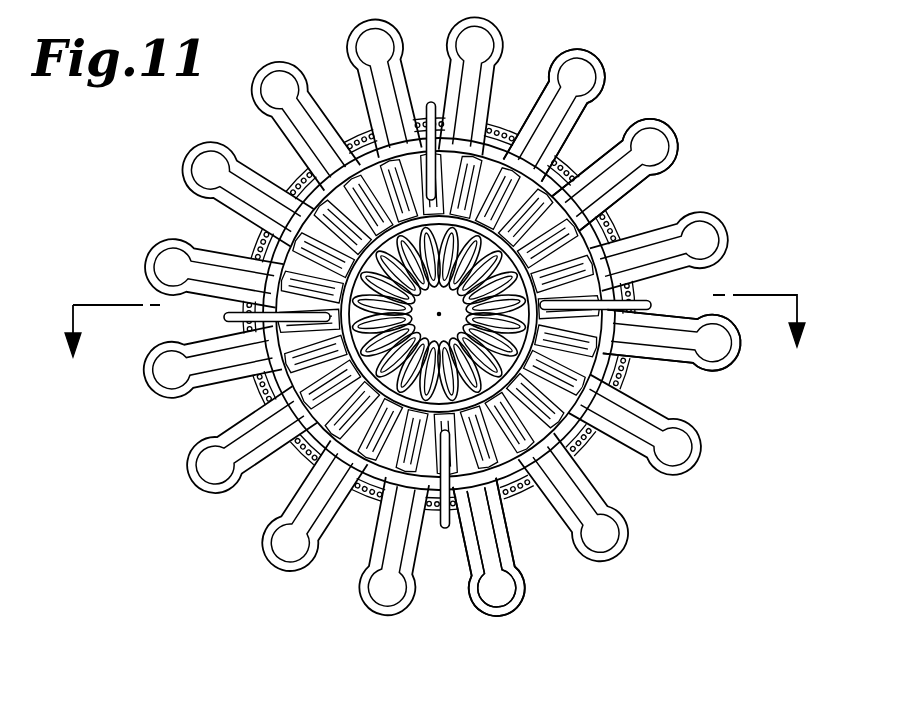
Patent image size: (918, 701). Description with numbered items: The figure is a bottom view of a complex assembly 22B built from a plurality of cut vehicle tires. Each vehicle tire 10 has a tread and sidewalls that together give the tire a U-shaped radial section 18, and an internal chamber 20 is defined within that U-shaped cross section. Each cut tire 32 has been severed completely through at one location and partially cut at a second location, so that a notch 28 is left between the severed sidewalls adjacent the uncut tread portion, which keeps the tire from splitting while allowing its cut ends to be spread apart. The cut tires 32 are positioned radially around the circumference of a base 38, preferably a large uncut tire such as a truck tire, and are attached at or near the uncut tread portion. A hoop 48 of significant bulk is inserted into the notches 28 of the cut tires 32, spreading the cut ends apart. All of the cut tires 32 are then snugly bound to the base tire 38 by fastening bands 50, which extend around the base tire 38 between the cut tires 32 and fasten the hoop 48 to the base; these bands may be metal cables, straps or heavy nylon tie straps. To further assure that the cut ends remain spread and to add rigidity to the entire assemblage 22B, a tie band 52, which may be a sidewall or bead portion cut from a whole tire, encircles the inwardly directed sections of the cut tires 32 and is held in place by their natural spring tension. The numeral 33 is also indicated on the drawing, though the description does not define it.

The vehicle tire 10 is at (435, 351).
The U-shaped radial section 18 is at (522, 590).
The internal chamber 20 is at (500, 598).
The assembly 22B is at (700, 152).
The notch 28 is at (510, 138).
The cut tire 32 is at (262, 556).
The arm side wall 33 is at (660, 416).
The base tire 38 is at (370, 500).
The hoop 48 is at (562, 183).
The fastening bands 50 is at (431, 100).
The tie band 52 is at (612, 238).